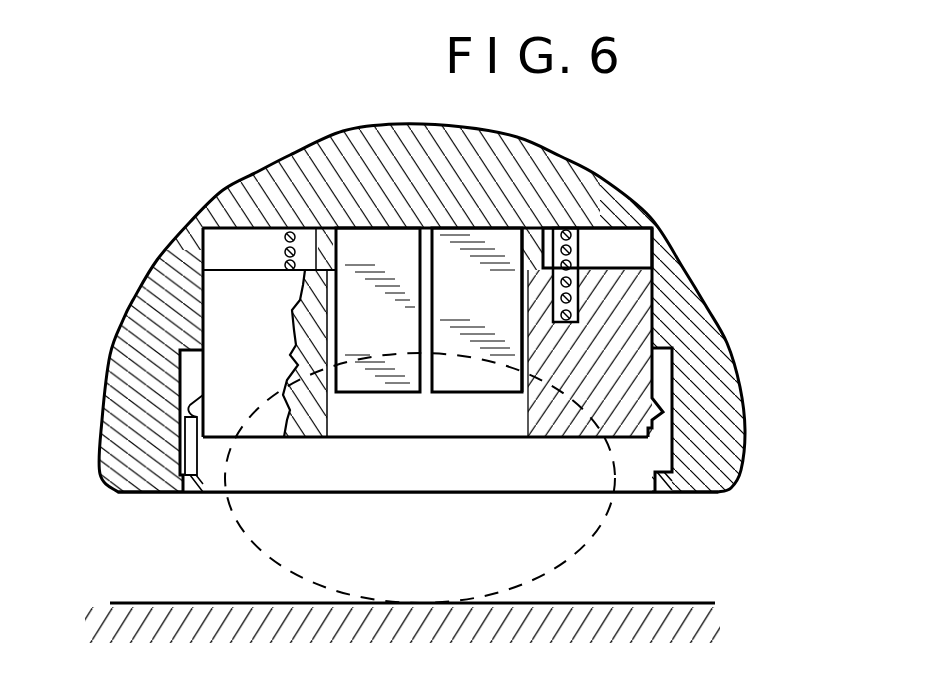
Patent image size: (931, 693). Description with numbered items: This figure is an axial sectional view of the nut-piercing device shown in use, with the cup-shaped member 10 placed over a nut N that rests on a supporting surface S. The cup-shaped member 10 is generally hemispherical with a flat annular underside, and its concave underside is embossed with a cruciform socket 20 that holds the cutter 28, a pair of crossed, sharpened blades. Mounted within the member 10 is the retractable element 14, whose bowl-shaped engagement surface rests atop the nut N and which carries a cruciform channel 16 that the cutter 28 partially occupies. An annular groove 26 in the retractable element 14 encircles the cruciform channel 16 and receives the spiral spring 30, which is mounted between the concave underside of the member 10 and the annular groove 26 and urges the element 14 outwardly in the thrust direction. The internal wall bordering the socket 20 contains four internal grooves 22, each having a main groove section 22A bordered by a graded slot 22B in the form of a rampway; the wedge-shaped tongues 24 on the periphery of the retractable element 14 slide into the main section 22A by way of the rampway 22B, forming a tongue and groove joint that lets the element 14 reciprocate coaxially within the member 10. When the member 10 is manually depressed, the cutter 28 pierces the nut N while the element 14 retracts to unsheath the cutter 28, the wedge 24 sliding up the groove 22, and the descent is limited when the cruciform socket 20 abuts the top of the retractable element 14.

The cup-shaped member 10 is at (300, 147).
The retractable element 14 is at (630, 313).
The cruciform channel 16 is at (325, 278).
The cruciform socket 20 is at (533, 243).
The internal grooves 22 is at (187, 372).
The main groove section 22A is at (420, 413).
The graded slot 22B is at (207, 493).
The tongues 24 is at (187, 398).
The annular groove 26 is at (572, 298).
The cutter 28 is at (373, 240).
The spiral spring 30 is at (572, 250).
The surface S is at (150, 602).
The nut N is at (527, 565).